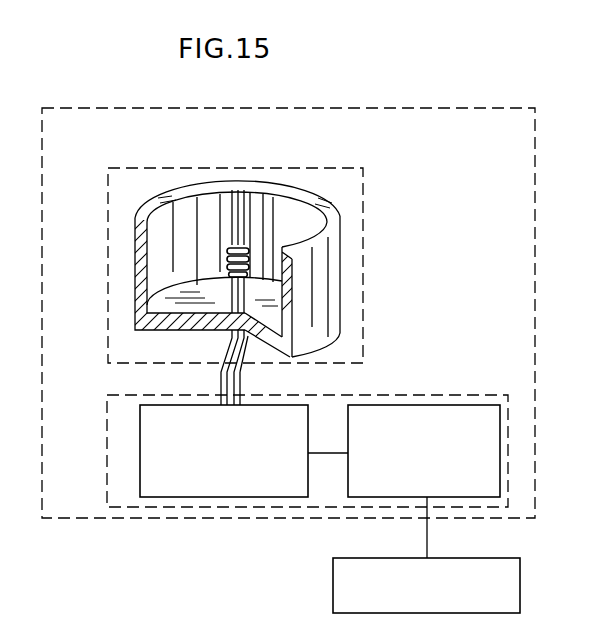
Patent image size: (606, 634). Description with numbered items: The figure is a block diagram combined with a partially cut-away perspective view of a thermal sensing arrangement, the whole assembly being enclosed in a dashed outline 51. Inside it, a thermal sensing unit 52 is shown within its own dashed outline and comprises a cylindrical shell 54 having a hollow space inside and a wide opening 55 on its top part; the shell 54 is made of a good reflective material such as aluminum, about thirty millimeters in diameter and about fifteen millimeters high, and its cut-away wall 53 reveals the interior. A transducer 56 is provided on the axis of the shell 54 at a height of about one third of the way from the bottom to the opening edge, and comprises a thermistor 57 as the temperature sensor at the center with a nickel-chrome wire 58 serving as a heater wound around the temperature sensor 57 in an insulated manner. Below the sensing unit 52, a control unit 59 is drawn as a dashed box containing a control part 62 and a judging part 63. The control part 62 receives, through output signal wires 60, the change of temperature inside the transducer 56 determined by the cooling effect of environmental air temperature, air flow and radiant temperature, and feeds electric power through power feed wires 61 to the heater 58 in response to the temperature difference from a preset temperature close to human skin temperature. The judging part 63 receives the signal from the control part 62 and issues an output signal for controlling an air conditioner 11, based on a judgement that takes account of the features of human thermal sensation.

The air conditioner 11 is at (520, 580).
The detecting apparatus 51 is at (470, 108).
The thermal sensing unit 52 is at (363, 246).
The vessel 53 is at (147, 268).
The cylindrical shell 54 is at (336, 323).
The wide opening 55 is at (277, 211).
The transducer 56 is at (210, 140).
The thermistor 57 is at (234, 243).
The nickel-chrome wire 58 is at (230, 250).
The control unit 59 is at (443, 388).
The output signal wires 60 is at (247, 384).
The power feed wires 61 is at (225, 383).
The control part 62 is at (178, 498).
The judging part 63 is at (358, 497).